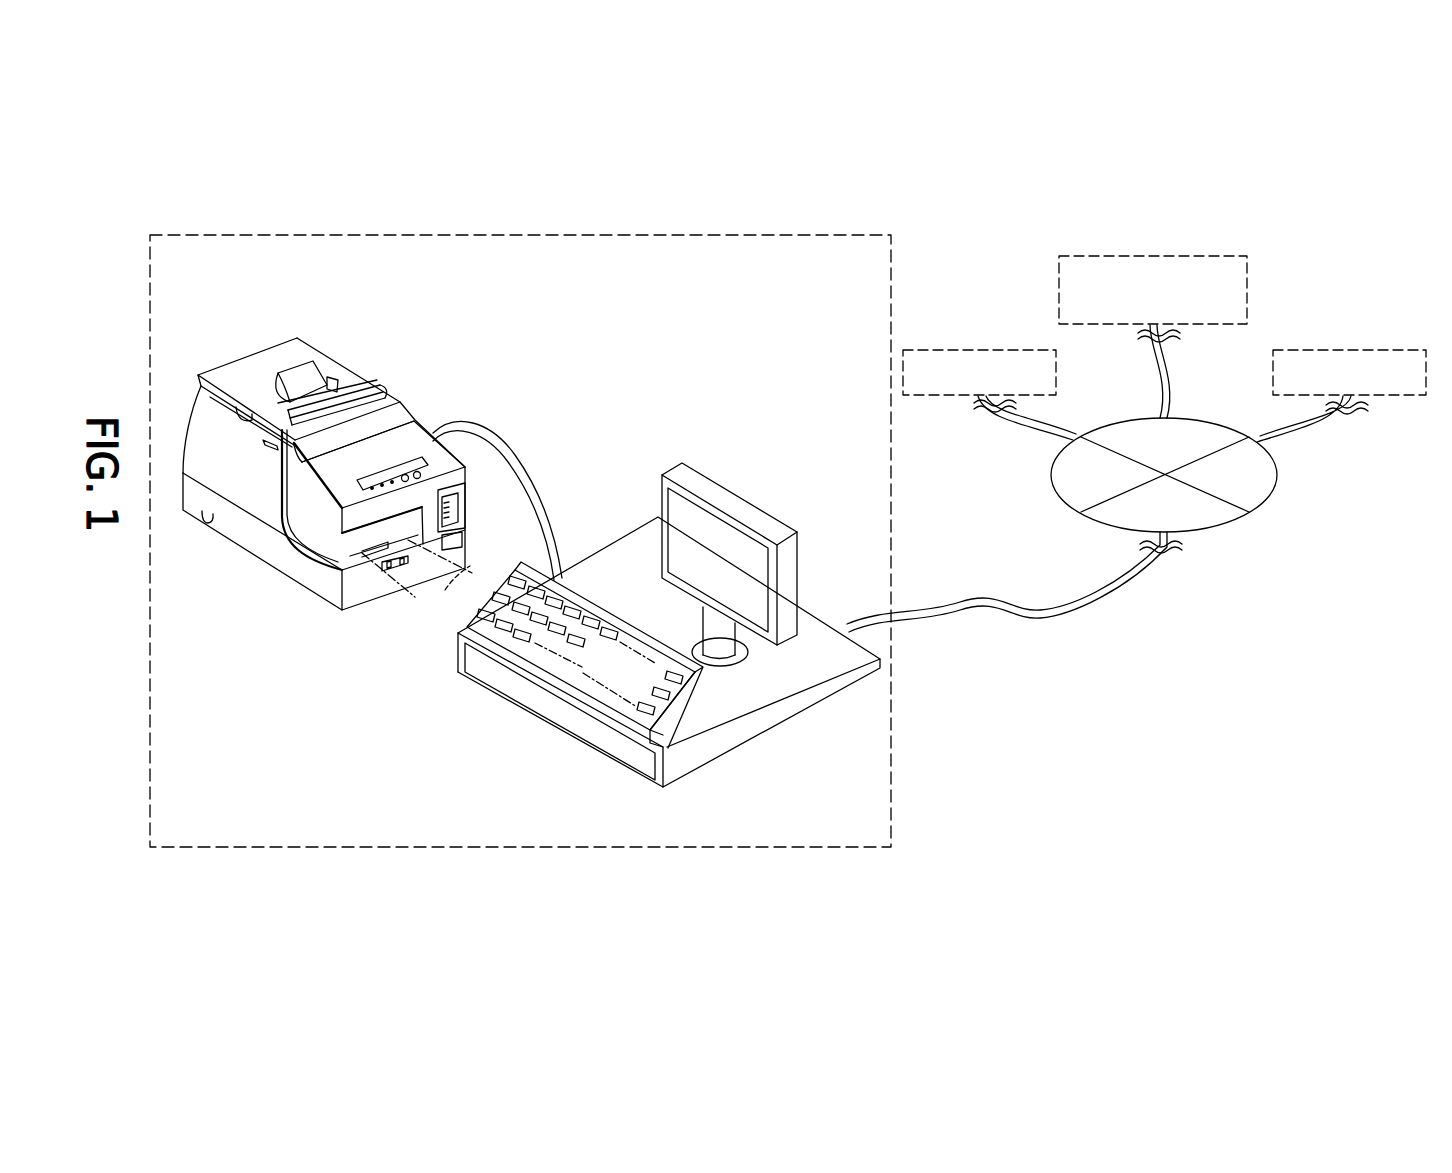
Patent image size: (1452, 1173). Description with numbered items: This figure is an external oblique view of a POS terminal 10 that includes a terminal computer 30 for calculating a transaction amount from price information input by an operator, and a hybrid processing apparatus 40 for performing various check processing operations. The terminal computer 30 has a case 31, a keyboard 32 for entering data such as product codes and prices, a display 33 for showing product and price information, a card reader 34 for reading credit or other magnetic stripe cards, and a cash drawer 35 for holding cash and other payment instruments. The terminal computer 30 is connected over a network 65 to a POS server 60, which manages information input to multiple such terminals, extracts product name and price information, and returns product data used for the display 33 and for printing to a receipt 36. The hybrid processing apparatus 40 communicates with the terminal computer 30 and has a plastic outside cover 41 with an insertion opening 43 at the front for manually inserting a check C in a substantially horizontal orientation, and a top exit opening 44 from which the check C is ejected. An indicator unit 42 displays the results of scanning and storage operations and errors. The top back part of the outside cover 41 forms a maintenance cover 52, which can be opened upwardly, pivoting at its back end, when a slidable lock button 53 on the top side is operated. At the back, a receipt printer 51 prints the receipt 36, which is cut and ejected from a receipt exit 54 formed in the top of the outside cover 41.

The POS terminal 10 is at (761, 233).
The terminal computer 30 is at (711, 436).
The case 31 is at (834, 682).
The keyboard 32 is at (590, 668).
The display 33 is at (757, 547).
The card reader 34 is at (647, 735).
The cash drawer 35 is at (500, 682).
The receipt 36 is at (302, 373).
The hybrid processing apparatus 40 is at (391, 344).
The outside cover 41 is at (461, 433).
The indicator unit 42 is at (461, 512).
The insertion opening 43 is at (336, 559).
The top exit opening 44 is at (371, 416).
The receipt printer 51 is at (311, 333).
The maintenance cover 52 is at (242, 373).
The slidable lock button 53 is at (266, 452).
The receipt exit 54 is at (333, 380).
The POS server 60 is at (1162, 255).
The network 65 is at (1050, 493).
The check C is at (405, 606).